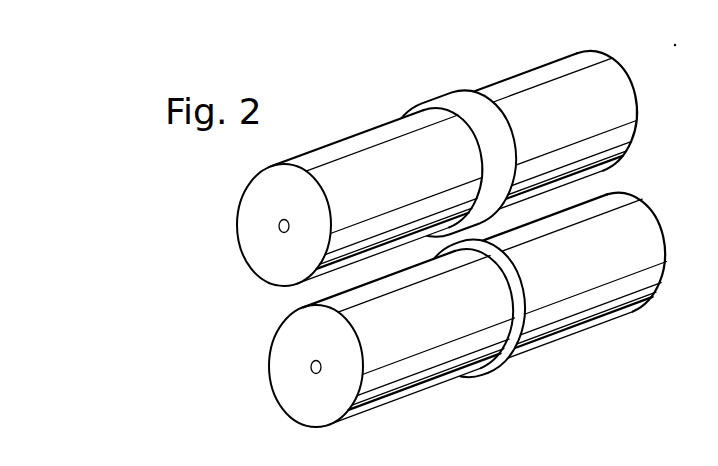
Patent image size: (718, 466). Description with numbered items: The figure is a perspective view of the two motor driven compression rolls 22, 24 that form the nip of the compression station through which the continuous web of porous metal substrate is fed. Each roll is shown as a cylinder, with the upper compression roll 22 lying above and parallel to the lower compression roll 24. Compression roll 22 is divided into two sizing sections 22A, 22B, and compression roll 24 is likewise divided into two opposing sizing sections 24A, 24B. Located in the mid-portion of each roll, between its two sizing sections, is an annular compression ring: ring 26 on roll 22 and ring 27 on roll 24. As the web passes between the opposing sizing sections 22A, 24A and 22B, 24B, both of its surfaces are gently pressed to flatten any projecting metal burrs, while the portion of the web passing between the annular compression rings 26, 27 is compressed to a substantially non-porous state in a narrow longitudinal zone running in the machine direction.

The compression roll 22 is at (420, 155).
The sizing section 22A is at (390, 128).
The sizing section 22B is at (573, 72).
The compression roll 24 is at (451, 312).
The sizing section 24A is at (413, 365).
The sizing section 24B is at (618, 293).
The annular compression ring 26 is at (473, 102).
The annular compression ring 27 is at (528, 312).